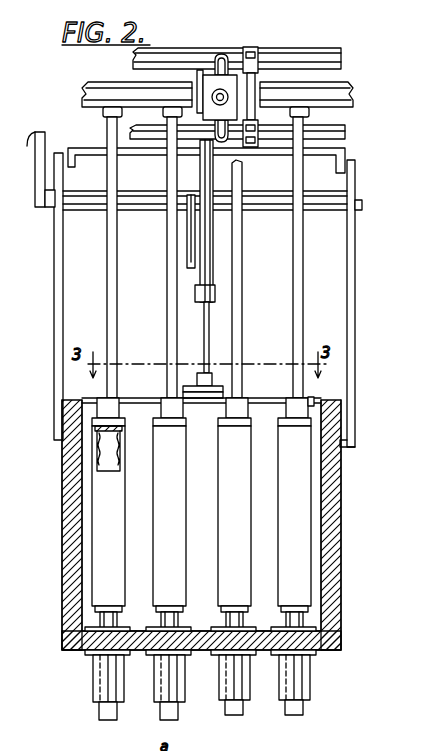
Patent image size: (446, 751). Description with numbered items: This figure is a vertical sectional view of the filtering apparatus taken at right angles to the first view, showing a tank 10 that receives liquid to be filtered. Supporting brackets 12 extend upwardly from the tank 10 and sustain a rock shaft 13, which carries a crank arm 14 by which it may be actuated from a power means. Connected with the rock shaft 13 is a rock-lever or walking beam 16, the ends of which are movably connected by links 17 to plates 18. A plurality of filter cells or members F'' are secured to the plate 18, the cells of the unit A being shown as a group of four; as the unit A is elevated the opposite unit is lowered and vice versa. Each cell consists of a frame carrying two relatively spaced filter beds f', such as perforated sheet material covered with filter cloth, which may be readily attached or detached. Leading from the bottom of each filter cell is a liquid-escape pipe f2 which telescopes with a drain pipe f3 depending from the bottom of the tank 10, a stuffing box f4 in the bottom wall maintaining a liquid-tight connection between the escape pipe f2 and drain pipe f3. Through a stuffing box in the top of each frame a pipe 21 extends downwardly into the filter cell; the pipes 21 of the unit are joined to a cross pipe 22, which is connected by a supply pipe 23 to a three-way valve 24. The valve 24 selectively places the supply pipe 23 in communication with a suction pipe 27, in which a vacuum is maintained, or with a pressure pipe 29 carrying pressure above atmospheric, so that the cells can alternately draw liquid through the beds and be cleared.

The tank 10 is at (333, 540).
The supporting brackets 12 is at (348, 268).
The rock shaft 13 is at (362, 205).
The crank arm 14 is at (38, 155).
The rock-lever or walking beam 16 is at (210, 257).
The links 17 is at (203, 325).
The plates 18 is at (314, 398).
The pipe 21 is at (168, 303).
The cross pipe 22 is at (338, 97).
The supply pipe 23 is at (228, 95).
The three-way valve 24 is at (214, 66).
The suction pipe 27 is at (335, 133).
The pressure pipe 29 is at (330, 62).
The unit A is at (332, 500).
The filter beds f' is at (77, 569).
The filter cell or member F'' is at (219, 569).
The liquid-escape pipe f2 is at (105, 712).
The drain pipe f3 is at (93, 693).
The stuffing box f4 is at (84, 655).